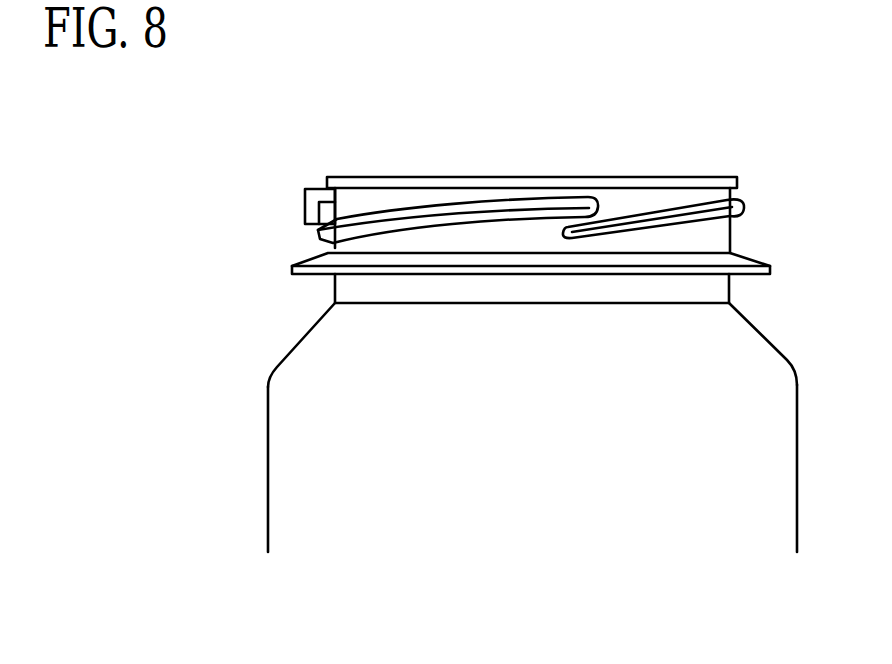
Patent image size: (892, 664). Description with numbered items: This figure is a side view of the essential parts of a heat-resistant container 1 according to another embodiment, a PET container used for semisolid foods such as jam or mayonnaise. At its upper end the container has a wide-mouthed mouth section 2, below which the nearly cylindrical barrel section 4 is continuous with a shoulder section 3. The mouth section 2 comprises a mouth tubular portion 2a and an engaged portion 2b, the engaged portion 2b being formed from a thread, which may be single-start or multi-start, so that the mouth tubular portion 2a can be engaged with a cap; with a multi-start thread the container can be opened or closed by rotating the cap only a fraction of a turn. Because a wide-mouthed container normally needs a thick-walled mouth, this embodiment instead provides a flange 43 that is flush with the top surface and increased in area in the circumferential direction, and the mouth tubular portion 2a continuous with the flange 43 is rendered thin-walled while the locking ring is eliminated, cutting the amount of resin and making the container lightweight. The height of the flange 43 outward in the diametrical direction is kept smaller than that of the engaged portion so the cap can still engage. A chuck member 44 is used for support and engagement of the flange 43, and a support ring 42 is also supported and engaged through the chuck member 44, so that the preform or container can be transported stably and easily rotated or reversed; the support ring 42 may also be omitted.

The heat-resistant container 1 is at (263, 365).
The mouth section 2 is at (635, 178).
The mouth tubular portion 2a is at (723, 237).
The engaged portion 2b is at (532, 198).
The shoulder section 3 is at (758, 325).
The barrel section 4 is at (270, 462).
The support ring 42 is at (325, 255).
The flange 43 is at (388, 182).
The chuck member 44 is at (305, 198).